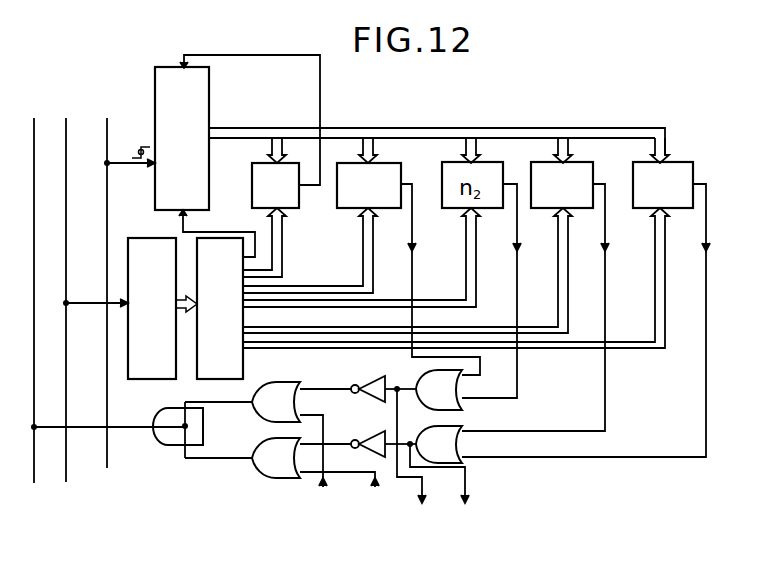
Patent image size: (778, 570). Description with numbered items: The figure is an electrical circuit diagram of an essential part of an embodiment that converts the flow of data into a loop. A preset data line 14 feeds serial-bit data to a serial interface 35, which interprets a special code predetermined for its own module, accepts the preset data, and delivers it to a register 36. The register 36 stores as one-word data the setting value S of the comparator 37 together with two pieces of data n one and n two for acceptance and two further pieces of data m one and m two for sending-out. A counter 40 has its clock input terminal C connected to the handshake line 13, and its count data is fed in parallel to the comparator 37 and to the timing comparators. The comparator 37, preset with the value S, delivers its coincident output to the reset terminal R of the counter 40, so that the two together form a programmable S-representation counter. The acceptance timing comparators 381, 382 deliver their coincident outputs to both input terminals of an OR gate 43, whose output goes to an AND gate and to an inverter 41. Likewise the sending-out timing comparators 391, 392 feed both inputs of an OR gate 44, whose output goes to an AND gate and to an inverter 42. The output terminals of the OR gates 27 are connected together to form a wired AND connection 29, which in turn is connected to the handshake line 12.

The handshake line 12 is at (34, 483).
The handshake line 13 is at (107, 468).
The preset data line 14 is at (66, 482).
The OR gate 27 is at (296, 385).
The wired AND connection 29 is at (158, 412).
The serial interface 35 is at (150, 238).
The register 36 is at (243, 379).
The comparator 37 is at (299, 209).
The acceptance timing comparator 381 is at (408, 165).
The acceptance timing comparator 382 is at (412, 222).
The sending-out timing comparator 391 is at (597, 162).
The sending-out timing comparator 392 is at (684, 162).
The counter 40 is at (155, 80).
The inverter 41 is at (357, 383).
The inverter 42 is at (357, 440).
The OR gate 43 is at (470, 410).
The OR gate 44 is at (472, 463).